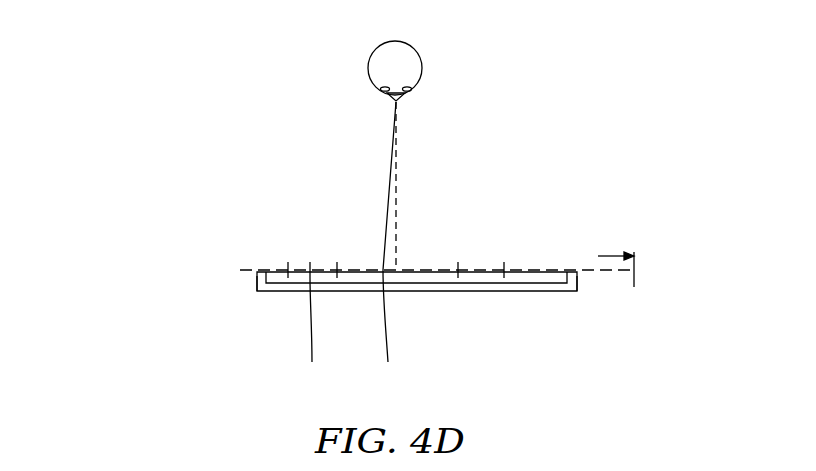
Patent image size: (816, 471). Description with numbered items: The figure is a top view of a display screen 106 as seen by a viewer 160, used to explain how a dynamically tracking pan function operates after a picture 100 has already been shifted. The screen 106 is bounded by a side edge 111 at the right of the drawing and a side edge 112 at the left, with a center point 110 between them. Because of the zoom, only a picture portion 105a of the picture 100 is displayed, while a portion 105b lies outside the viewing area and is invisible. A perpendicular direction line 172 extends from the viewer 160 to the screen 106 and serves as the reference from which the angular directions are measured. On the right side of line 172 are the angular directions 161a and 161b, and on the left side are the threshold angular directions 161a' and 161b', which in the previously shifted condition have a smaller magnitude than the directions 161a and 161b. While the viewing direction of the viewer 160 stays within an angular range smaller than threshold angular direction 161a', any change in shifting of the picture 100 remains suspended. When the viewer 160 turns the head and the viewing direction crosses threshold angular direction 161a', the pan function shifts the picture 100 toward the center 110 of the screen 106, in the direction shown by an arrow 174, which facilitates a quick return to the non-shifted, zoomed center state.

The viewer 160 is at (367, 70).
The perpendicular direction line 172 is at (399, 172).
The portion of picture 105b is at (236, 271).
The picture 100 is at (592, 268).
The center point of display screen 110 is at (394, 276).
The side edge of screen 111 is at (578, 279).
The side edge of screen 112 is at (257, 284).
The picture portion 105a is at (277, 264).
The display screen 106 is at (277, 264).
The threshold angular direction 161a' is at (312, 248).
The threshold angular direction 161b' is at (219, 277).
The angular direction 161a is at (477, 233).
The angular direction 161b is at (517, 249).
The arrow 174 is at (624, 254).